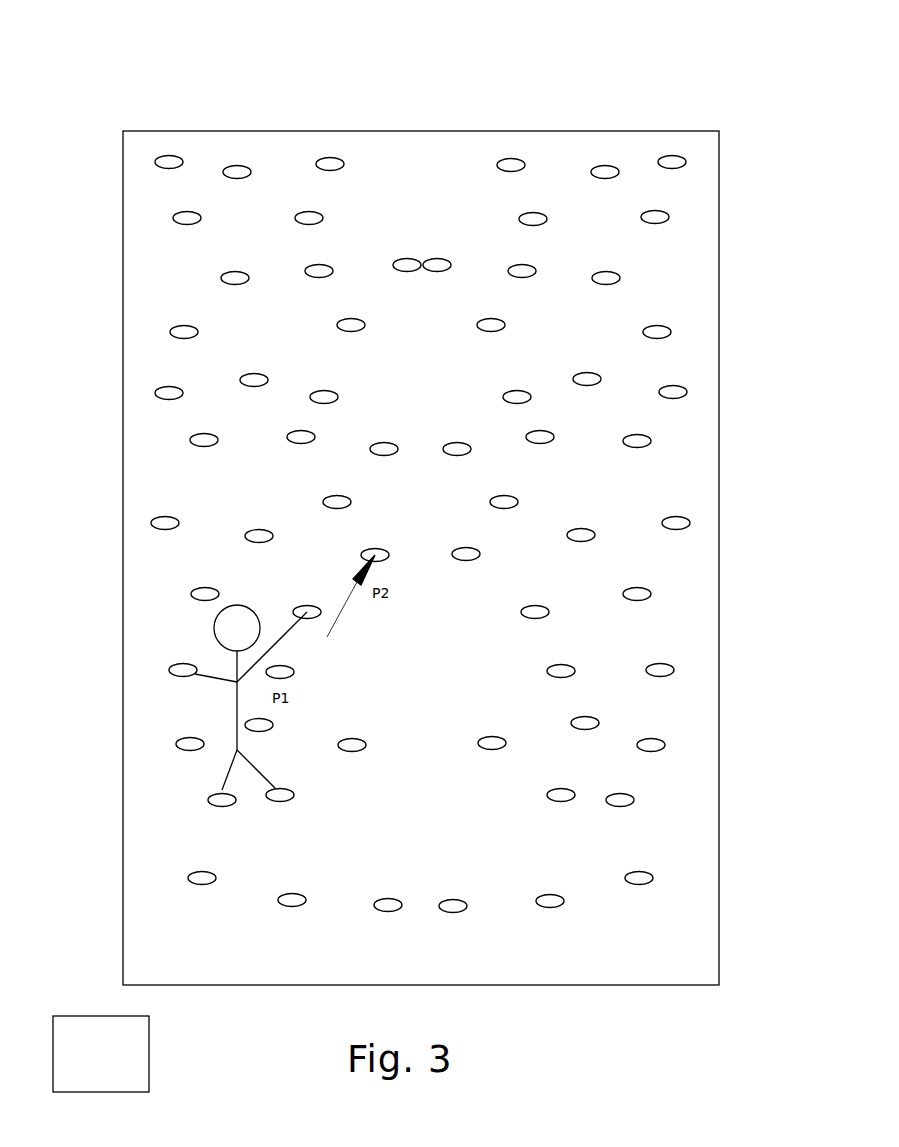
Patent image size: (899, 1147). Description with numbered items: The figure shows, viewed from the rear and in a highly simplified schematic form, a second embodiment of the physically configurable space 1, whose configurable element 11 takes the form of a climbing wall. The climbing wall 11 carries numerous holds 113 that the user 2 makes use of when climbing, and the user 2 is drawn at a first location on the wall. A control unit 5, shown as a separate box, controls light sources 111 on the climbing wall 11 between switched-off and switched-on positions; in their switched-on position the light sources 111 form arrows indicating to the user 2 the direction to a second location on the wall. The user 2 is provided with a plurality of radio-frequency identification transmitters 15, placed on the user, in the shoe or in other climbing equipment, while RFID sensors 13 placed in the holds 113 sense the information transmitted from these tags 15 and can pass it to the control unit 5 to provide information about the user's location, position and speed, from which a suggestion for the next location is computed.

The physically configurable space 1 is at (578, 40).
The configurable element 11 is at (172, 285).
The holds 113 is at (168, 390).
The light sources 111 is at (353, 577).
The sensors 13 is at (300, 607).
The user 2 is at (237, 605).
The radio-frequency identification transmitters 15 is at (195, 675).
The control unit 5 is at (110, 1047).